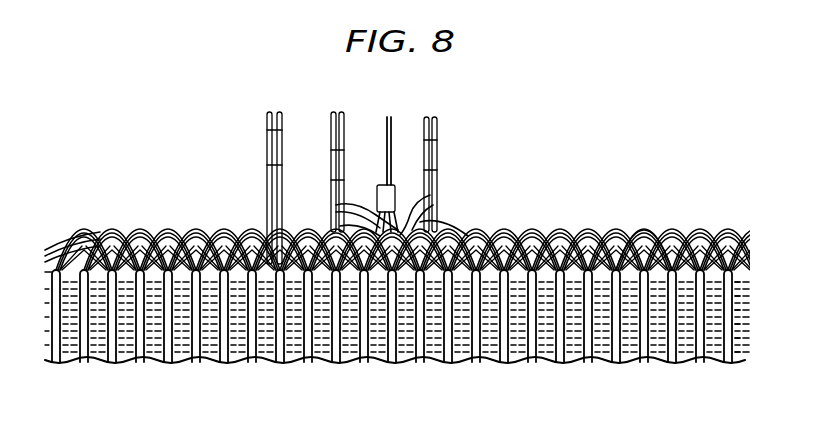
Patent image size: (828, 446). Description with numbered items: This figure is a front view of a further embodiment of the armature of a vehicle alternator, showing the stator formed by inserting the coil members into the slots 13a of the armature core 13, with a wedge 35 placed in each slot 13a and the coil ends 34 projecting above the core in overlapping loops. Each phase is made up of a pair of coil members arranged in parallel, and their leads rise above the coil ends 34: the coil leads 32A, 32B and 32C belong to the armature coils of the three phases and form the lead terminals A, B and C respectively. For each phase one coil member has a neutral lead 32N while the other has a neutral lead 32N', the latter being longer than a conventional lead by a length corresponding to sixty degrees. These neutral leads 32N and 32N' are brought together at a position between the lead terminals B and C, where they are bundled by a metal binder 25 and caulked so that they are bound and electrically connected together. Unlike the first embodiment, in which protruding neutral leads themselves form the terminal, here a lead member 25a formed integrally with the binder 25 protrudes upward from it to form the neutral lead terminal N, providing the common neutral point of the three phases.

The armature core 13 is at (460, 353).
The slots 13a is at (478, 355).
The wedge 35 is at (503, 358).
The coil ends 34 is at (623, 240).
The metal binder 25 is at (377, 192).
The lead member 25a is at (387, 150).
The coil lead 32A is at (268, 138).
The coil lead 32B is at (331, 156).
The coil lead 32C is at (437, 140).
The neutral lead 32N is at (432, 213).
The neutral lead 32N' is at (408, 223).
The lead terminal A is at (275, 112).
The lead terminal B is at (338, 112).
The neutral lead terminal N is at (389, 117).
The lead terminal C is at (433, 117).